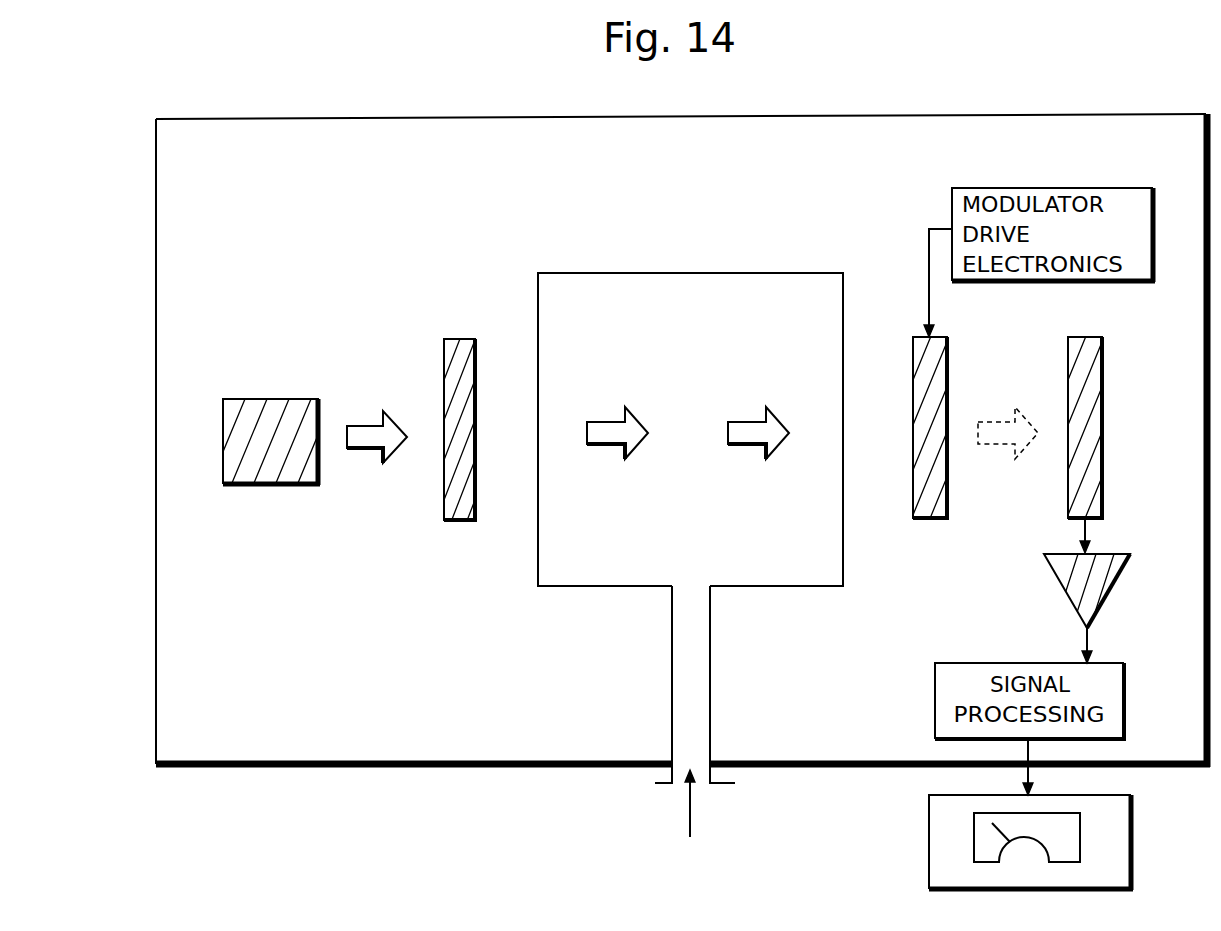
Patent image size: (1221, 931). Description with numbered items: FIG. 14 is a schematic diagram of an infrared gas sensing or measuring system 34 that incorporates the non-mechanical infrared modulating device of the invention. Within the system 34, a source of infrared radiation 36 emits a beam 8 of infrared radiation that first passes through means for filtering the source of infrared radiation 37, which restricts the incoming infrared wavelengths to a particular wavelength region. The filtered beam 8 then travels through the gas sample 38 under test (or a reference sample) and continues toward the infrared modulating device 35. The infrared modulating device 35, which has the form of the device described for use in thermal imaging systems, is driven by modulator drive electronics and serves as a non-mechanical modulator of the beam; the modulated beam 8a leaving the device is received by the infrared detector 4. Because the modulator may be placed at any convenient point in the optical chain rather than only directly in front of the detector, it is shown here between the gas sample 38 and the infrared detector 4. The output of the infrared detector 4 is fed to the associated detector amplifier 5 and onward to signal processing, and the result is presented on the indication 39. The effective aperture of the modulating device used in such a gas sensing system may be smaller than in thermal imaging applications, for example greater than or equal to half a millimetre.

The infrared gas sensing or measuring system 34 is at (250, 118).
The infrared modulating device 35 is at (938, 520).
The source of infrared radiation 36 is at (233, 399).
The means for filtering the source of infrared radiation 37 is at (457, 339).
The gas sample 38 is at (545, 272).
The indication 39 is at (1107, 842).
The infrared detector 4 is at (1102, 355).
The detector amplifier 5 is at (1117, 556).
The light beam 8 is at (568, 435).
The modulated light beam 8a is at (1008, 433).